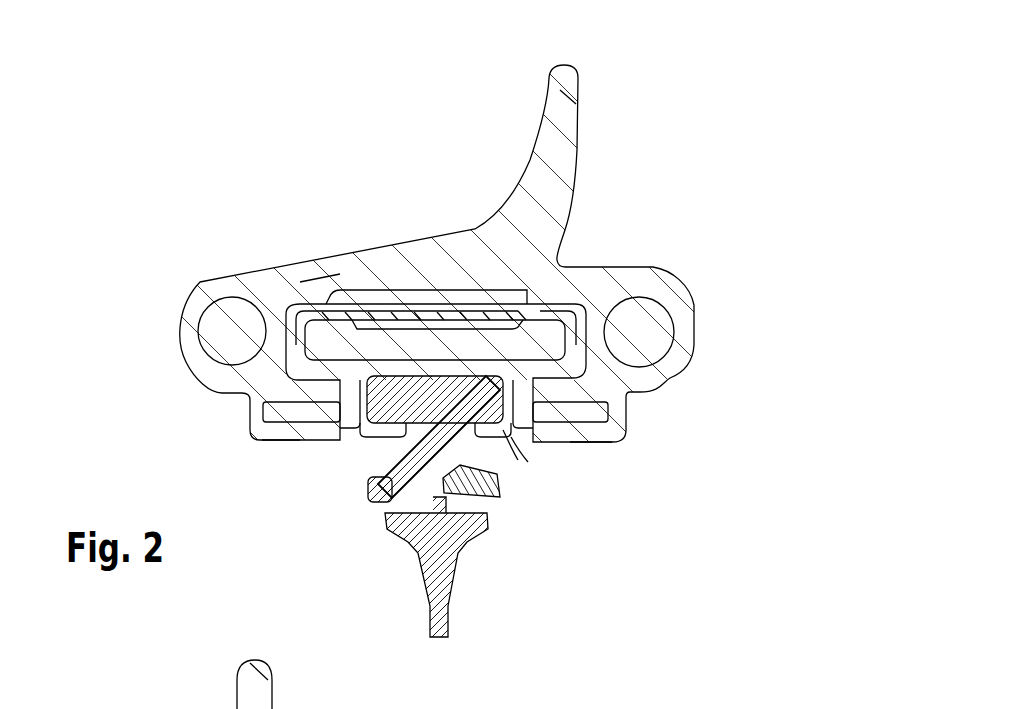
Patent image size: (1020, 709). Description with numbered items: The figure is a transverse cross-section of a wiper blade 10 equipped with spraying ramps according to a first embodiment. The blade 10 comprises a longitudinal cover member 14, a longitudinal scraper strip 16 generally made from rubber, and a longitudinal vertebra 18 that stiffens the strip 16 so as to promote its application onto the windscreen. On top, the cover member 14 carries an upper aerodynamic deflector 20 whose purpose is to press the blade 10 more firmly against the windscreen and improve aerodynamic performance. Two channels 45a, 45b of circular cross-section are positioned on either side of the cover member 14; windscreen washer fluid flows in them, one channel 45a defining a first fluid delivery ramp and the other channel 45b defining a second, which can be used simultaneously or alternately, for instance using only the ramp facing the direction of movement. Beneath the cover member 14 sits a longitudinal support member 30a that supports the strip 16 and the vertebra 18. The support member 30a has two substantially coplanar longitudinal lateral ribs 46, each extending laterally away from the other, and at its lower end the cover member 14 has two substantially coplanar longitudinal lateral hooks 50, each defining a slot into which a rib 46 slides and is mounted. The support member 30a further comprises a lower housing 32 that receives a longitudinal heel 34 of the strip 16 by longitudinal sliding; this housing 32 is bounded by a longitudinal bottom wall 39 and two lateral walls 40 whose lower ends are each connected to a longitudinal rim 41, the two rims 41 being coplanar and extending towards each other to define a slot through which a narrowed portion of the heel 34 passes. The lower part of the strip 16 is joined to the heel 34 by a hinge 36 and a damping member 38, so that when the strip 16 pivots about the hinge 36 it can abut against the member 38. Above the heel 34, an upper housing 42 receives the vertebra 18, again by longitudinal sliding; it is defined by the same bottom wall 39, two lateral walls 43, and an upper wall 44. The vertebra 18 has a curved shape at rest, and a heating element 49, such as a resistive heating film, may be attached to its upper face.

The wiper blade 10 is at (313, 182).
The longitudinal cover member 14 is at (345, 255).
The longitudinal scraper strip 16 is at (405, 586).
The longitudinal vertebra 18 is at (587, 268).
The upper aerodynamic deflector 20 is at (563, 115).
The longitudinal support member 30a is at (362, 446).
The lower housing 32 is at (503, 440).
The longitudinal heel 34 is at (407, 373).
The hinge 36 is at (384, 513).
The damping member 38 is at (370, 490).
The longitudinal bottom wall 39 is at (417, 367).
The lateral walls 40 is at (307, 412).
The longitudinal rim 41 is at (503, 453).
The upper housing 42 is at (312, 320).
The lateral walls 43 is at (286, 343).
The upper wall 44 is at (437, 319).
The channel 45a is at (227, 322).
The channel 45b is at (635, 325).
The longitudinal lateral ribs 46 is at (280, 413).
The heating element 49 is at (478, 318).
The longitudinal lateral hooks 50 is at (280, 440).